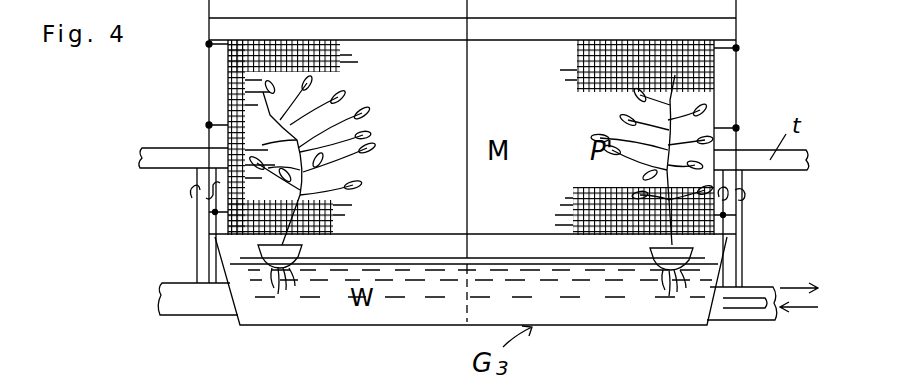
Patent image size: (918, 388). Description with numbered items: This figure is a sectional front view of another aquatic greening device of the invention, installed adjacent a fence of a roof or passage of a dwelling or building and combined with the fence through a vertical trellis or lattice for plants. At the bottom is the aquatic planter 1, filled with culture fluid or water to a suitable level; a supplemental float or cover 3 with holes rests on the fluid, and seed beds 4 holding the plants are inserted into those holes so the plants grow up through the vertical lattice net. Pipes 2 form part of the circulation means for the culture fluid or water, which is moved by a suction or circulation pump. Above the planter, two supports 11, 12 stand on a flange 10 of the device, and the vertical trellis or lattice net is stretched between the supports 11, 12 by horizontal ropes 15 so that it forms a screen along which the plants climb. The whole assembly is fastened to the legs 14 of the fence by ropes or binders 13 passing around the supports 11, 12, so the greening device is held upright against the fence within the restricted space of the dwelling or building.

The aquatic planter 1 is at (687, 317).
The pipes 2 is at (743, 309).
The supplemental float or cover 3 is at (525, 262).
The seed beds 4 is at (660, 258).
The flange 10 is at (198, 237).
The support 11 is at (204, 108).
The support 12 is at (736, 95).
The ropes or binders 13 is at (192, 198).
The legs 14 is at (734, 267).
The horizontal ropes 15 is at (716, 42).